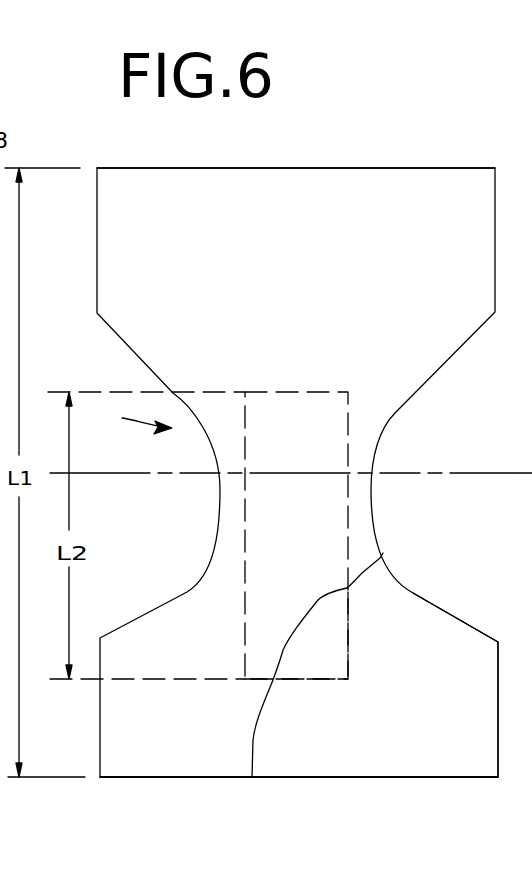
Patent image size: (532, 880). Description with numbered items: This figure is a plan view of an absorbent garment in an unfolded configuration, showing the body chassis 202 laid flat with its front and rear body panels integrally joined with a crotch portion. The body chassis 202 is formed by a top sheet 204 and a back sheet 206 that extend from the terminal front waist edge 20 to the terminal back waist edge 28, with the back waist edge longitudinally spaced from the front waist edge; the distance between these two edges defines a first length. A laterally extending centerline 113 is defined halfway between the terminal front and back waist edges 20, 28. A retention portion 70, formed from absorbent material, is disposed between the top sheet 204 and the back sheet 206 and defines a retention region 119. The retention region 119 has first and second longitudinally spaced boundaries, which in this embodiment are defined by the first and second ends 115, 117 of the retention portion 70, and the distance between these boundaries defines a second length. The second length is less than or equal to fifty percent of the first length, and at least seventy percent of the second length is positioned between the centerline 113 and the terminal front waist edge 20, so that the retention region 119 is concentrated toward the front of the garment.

The terminal back waist edge 28 is at (329, 168).
The body chassis 202 is at (172, 213).
The back sheet 206 is at (391, 762).
The terminal front waist edge 20 is at (301, 777).
The second end of retention portion 117 is at (288, 392).
The first end of retention portion 115 is at (316, 679).
The retention portion 70 is at (322, 653).
The laterally extending centerline 113 is at (115, 473).
The retention region 119 is at (131, 417).
The top sheet 204 is at (358, 557).